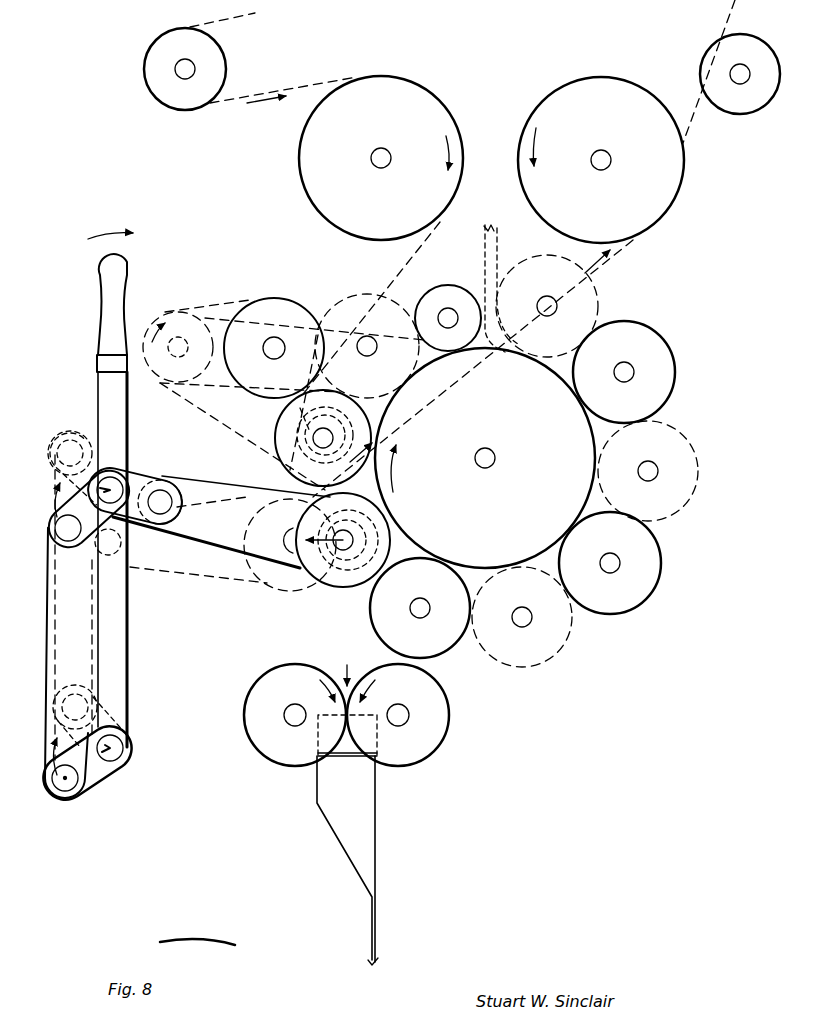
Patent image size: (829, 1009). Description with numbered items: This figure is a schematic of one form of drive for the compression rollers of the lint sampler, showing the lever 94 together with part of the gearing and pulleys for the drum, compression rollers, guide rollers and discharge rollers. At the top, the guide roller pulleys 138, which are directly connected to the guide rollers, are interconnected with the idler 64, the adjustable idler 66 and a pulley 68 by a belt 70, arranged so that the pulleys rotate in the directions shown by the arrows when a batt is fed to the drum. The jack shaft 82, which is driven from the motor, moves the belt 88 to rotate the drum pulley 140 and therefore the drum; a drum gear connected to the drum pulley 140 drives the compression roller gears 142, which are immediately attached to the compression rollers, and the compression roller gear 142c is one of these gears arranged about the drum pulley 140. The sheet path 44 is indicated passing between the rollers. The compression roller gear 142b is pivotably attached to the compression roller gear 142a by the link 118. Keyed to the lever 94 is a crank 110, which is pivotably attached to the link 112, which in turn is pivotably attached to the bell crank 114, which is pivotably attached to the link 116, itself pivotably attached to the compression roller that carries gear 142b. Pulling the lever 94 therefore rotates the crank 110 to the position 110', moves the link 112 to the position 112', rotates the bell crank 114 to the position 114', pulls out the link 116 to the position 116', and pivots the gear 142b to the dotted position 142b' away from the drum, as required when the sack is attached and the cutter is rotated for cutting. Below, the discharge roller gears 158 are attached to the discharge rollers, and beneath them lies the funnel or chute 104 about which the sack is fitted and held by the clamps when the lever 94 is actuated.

The adjustable idler 66 is at (143, 60).
The belt 70 is at (280, 91).
The idler 64 is at (735, 108).
The guide roller pulleys 138 is at (389, 200).
The sheet 44 is at (484, 250).
The jack shaft 82 is at (172, 305).
The lever 94 is at (100, 312).
The belt 88 is at (195, 408).
The pulley 68 is at (295, 425).
The compression roller gear 142a is at (283, 466).
The drum pulley 140 is at (505, 423).
The compression roller gears 142 is at (656, 393).
The roller 142c is at (455, 640).
The link 118 is at (378, 520).
The compression roller gear 142b is at (318, 609).
The pivoted position of compression roller gear 142b' is at (279, 571).
The bell crank 114 is at (115, 491).
The rotated position of bell crank 114' is at (113, 525).
The link 116 is at (221, 522).
The pulled-out position of link 116' is at (198, 556).
The link 112 is at (45, 663).
The moved position of link 112' is at (46, 607).
The crank 110 is at (105, 765).
The rotated position of crank 110' is at (125, 716).
The discharge roller gears 158 is at (258, 752).
The funnel or chute 104 is at (375, 840).